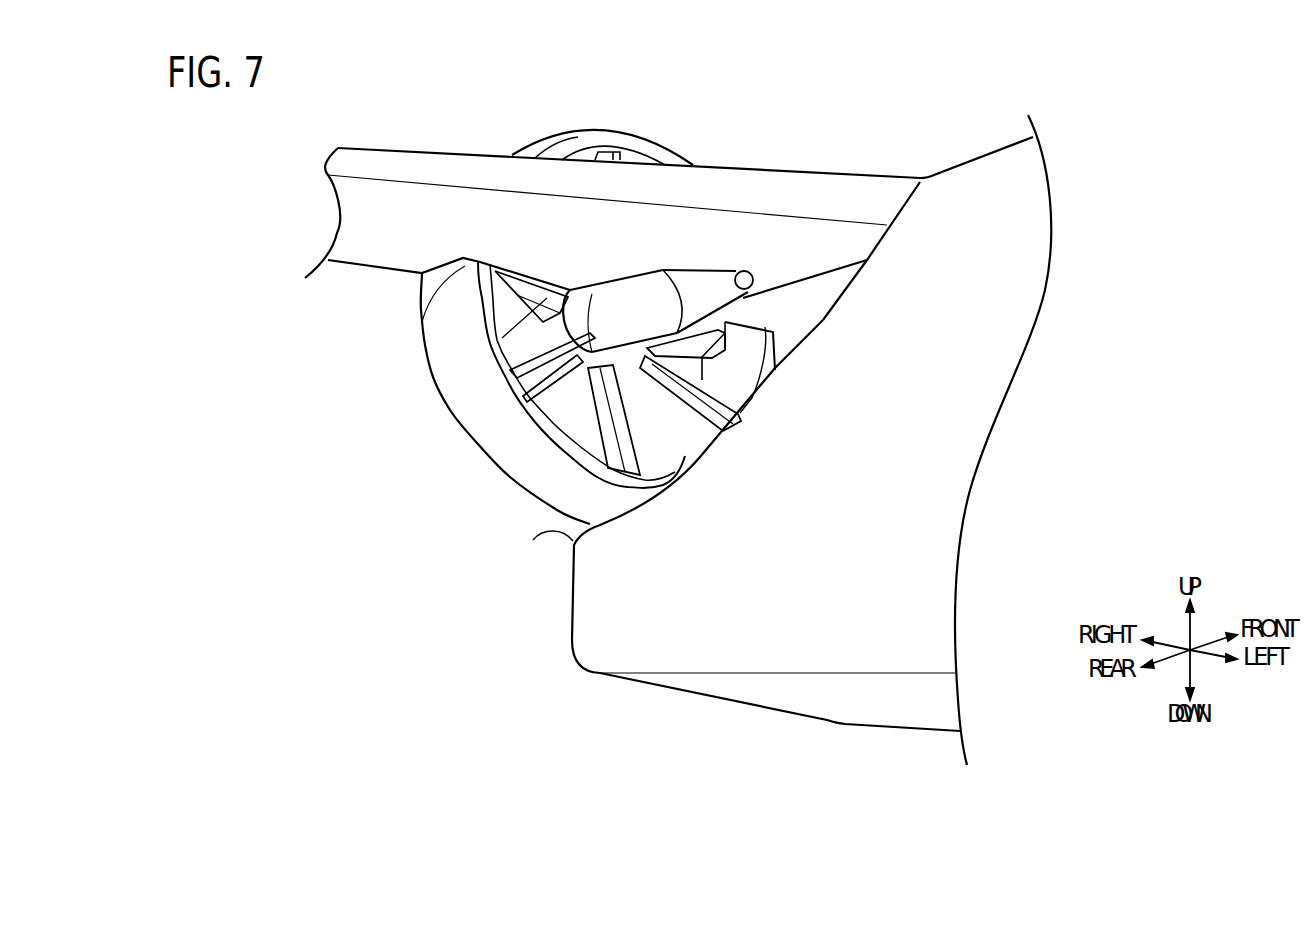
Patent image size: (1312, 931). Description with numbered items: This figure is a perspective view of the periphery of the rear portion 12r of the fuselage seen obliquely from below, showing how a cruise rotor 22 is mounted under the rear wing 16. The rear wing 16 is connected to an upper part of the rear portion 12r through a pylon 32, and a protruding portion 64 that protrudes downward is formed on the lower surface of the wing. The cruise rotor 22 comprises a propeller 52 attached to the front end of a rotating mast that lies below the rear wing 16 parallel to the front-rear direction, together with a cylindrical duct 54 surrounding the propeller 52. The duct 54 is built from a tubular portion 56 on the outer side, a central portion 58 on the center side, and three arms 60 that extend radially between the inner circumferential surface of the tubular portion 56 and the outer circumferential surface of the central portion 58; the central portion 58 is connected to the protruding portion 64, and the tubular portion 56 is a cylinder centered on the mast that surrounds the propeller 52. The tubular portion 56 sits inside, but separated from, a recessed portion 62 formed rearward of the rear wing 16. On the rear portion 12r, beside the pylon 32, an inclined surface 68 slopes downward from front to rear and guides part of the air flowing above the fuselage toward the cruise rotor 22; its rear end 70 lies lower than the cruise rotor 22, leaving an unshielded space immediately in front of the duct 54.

The rear portion 12r is at (977, 152).
The rear wing 16 is at (415, 160).
The cruise rotor 22 is at (578, 127).
The pylon 32 is at (843, 272).
The propeller 52 is at (518, 290).
The duct 54 is at (472, 505).
The tubular portion 56 is at (452, 375).
The central portion 58 is at (599, 354).
The arm 60 is at (508, 372).
The recessed portion 62 is at (422, 322).
The protruding portion 64 is at (622, 302).
The inclined surface 68 is at (835, 298).
The rear end 70 is at (570, 534).